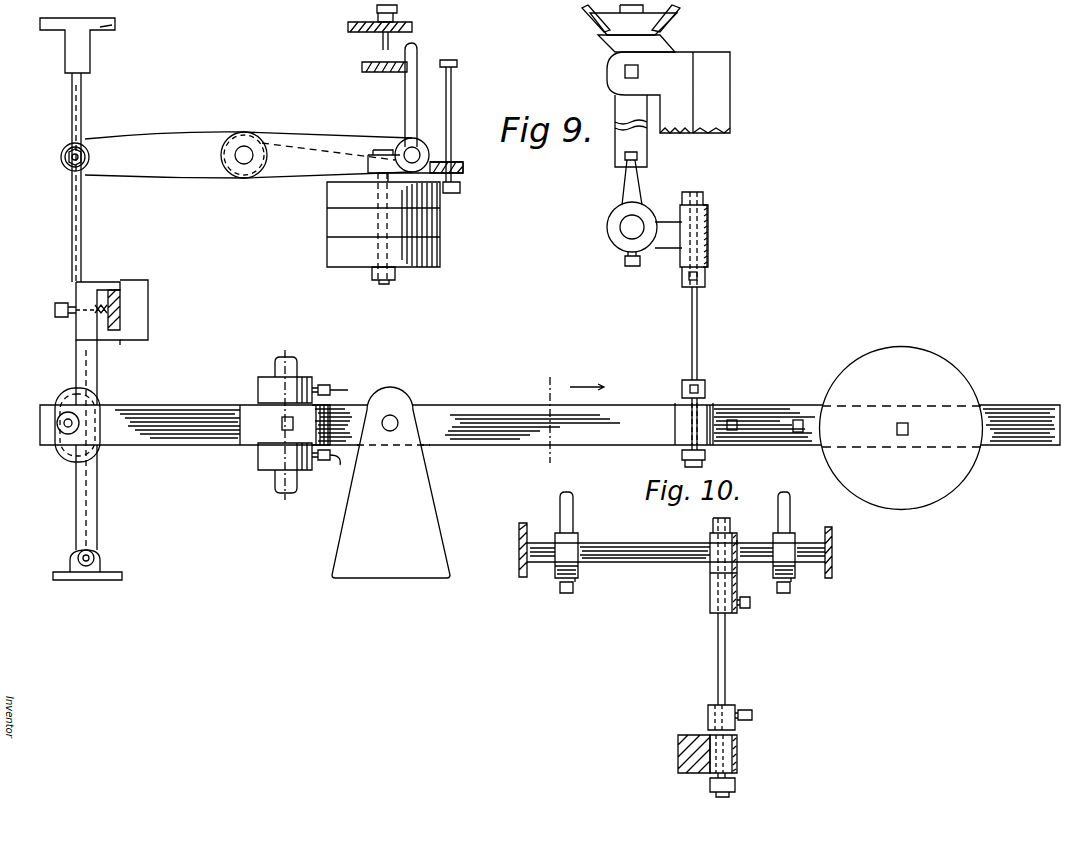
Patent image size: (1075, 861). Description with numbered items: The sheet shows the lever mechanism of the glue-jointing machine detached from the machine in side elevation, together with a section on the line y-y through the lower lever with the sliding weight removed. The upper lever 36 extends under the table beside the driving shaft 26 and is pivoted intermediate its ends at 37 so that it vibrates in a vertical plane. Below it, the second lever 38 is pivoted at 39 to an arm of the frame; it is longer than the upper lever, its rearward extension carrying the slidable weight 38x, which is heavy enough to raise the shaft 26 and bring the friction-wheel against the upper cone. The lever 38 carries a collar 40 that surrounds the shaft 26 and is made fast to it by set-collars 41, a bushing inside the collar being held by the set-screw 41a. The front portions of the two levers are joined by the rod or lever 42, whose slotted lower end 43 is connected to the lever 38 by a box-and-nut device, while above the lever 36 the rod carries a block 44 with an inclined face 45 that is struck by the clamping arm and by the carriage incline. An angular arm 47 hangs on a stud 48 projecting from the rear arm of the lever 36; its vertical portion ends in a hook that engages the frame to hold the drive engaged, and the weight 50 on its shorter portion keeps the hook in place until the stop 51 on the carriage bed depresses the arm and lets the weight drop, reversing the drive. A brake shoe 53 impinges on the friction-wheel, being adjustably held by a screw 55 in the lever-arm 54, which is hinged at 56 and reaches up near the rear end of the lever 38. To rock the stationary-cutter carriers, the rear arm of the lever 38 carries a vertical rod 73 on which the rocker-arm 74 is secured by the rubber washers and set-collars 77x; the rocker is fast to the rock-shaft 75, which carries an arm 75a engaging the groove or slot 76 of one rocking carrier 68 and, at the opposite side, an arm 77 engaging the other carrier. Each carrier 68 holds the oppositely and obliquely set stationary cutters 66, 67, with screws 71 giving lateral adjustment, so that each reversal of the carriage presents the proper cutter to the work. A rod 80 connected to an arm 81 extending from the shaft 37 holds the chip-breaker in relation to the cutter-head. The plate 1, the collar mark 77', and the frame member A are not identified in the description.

In FIG. 9, the supporting plate 1 is at (368, 73).
In FIG. 9, the shaft 26 is at (288, 372).
In FIG. 9, the upper lever 36 is at (236, 155).
In FIG. 9, the pivot 37 is at (244, 155).
In FIG. 9, the second lever 38 is at (490, 406).
In FIG. 10, the second lever 38 is at (678, 756).
In FIG. 9, the weight 38x is at (901, 428).
In FIG. 9, the pivot 39 is at (394, 418).
In FIG. 9, the collar 40 is at (252, 435).
In FIG. 9, the set-collars 41 is at (318, 389).
In FIG. 9, the set-screw 41a is at (345, 492).
In FIG. 9, the rod or lever 42 is at (81, 223).
In FIG. 9, the slotted lower end 43 is at (60, 392).
In FIG. 9, the block 44 is at (82, 18).
In FIG. 9, the inclined face 45 is at (113, 25).
In FIG. 9, the angular arm 47 is at (405, 97).
In FIG. 9, the stud 48 is at (416, 150).
In FIG. 9, the weight 50 is at (383, 228).
In FIG. 9, the stop 51 is at (380, 43).
In FIG. 9, the brake shoe 53 is at (148, 308).
In FIG. 9, the lever-arm 54 is at (93, 282).
In FIG. 9, the screw 55 is at (55, 310).
In FIG. 9, the hinge 56 is at (95, 556).
In FIG. 9, the stationary cutter 66 is at (678, 12).
In FIG. 9, the stationary cutter 67 is at (585, 14).
In FIG. 9, the rocking carrier 68 is at (668, 42).
In FIG. 9, the screw 71 is at (640, 72).
In FIG. 9, the vertical rod 73 is at (699, 319).
In FIG. 10, the vertical rod 73 is at (727, 660).
In FIG. 9, the rocker-arm 74 is at (670, 243).
In FIG. 10, the rocker-arm 74 is at (712, 565).
In FIG. 9, the rock-shaft 75 is at (636, 223).
In FIG. 10, the rock-shaft 75 is at (664, 545).
In FIG. 10, the arm 75a is at (572, 545).
In FIG. 9, the groove or slot 76 is at (622, 170).
In FIG. 10, the arm 77 is at (795, 542).
In FIG. 10, the collar 77' is at (752, 559).
In FIG. 9, the rubber washers and set-collars 77x is at (709, 212).
In FIG. 9, the rod 80 is at (452, 102).
In FIG. 9, the arm 81 is at (460, 163).
In FIG. 10, the frame A is at (832, 552).